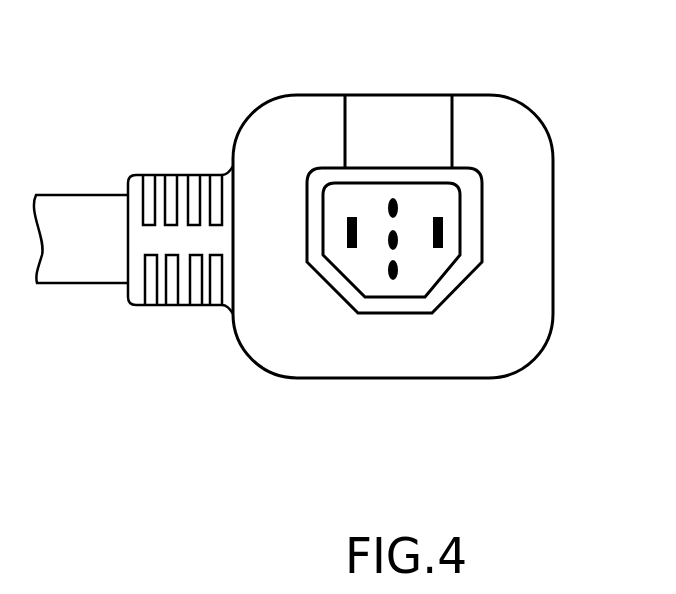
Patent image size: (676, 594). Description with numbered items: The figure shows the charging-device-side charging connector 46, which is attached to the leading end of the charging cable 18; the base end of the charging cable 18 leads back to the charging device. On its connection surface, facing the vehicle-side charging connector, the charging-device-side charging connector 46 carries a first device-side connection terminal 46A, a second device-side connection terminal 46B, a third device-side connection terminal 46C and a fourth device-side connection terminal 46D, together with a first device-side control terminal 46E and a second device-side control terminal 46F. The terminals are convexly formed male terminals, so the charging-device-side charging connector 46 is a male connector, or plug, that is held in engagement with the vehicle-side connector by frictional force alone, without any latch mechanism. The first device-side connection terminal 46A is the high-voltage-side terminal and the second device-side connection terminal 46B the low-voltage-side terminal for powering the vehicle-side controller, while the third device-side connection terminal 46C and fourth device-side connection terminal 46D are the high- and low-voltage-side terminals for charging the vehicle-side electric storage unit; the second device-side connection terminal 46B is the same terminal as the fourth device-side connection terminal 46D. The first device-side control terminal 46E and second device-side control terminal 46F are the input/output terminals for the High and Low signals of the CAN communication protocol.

The charging cable 18 is at (93, 195).
The charging-device-side charging connector 46 is at (514, 104).
The first device-side connection terminal 46A is at (393, 272).
The second device-side connection terminal 46B is at (353, 217).
The third device-side connection terminal 46C is at (443, 236).
The fourth device-side connection terminal 46D is at (352, 232).
The first device-side control terminal 46E is at (398, 243).
The second device-side control terminal 46F is at (393, 205).